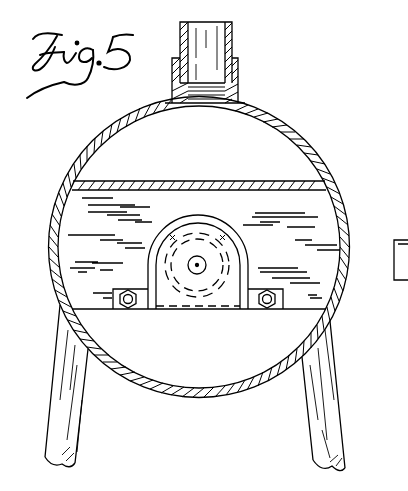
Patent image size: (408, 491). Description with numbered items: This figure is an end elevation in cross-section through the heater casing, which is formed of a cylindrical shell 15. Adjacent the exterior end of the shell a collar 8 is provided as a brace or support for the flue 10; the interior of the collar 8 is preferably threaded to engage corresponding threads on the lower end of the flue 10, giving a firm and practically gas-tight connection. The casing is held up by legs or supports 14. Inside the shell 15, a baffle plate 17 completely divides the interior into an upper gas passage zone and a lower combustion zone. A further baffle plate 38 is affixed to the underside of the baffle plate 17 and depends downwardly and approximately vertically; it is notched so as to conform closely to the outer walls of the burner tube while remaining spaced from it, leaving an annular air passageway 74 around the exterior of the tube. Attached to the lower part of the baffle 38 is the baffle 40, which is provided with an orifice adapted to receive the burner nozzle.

The collar 8 is at (238, 77).
The flue 10 is at (232, 40).
The legs or supports 14 is at (75, 415).
The cylindrical shell 15 is at (282, 118).
The baffle plate 17 is at (186, 181).
The baffle plate 38 is at (317, 205).
The baffle plate 40 is at (223, 306).
The annular air passageway 74 is at (247, 249).